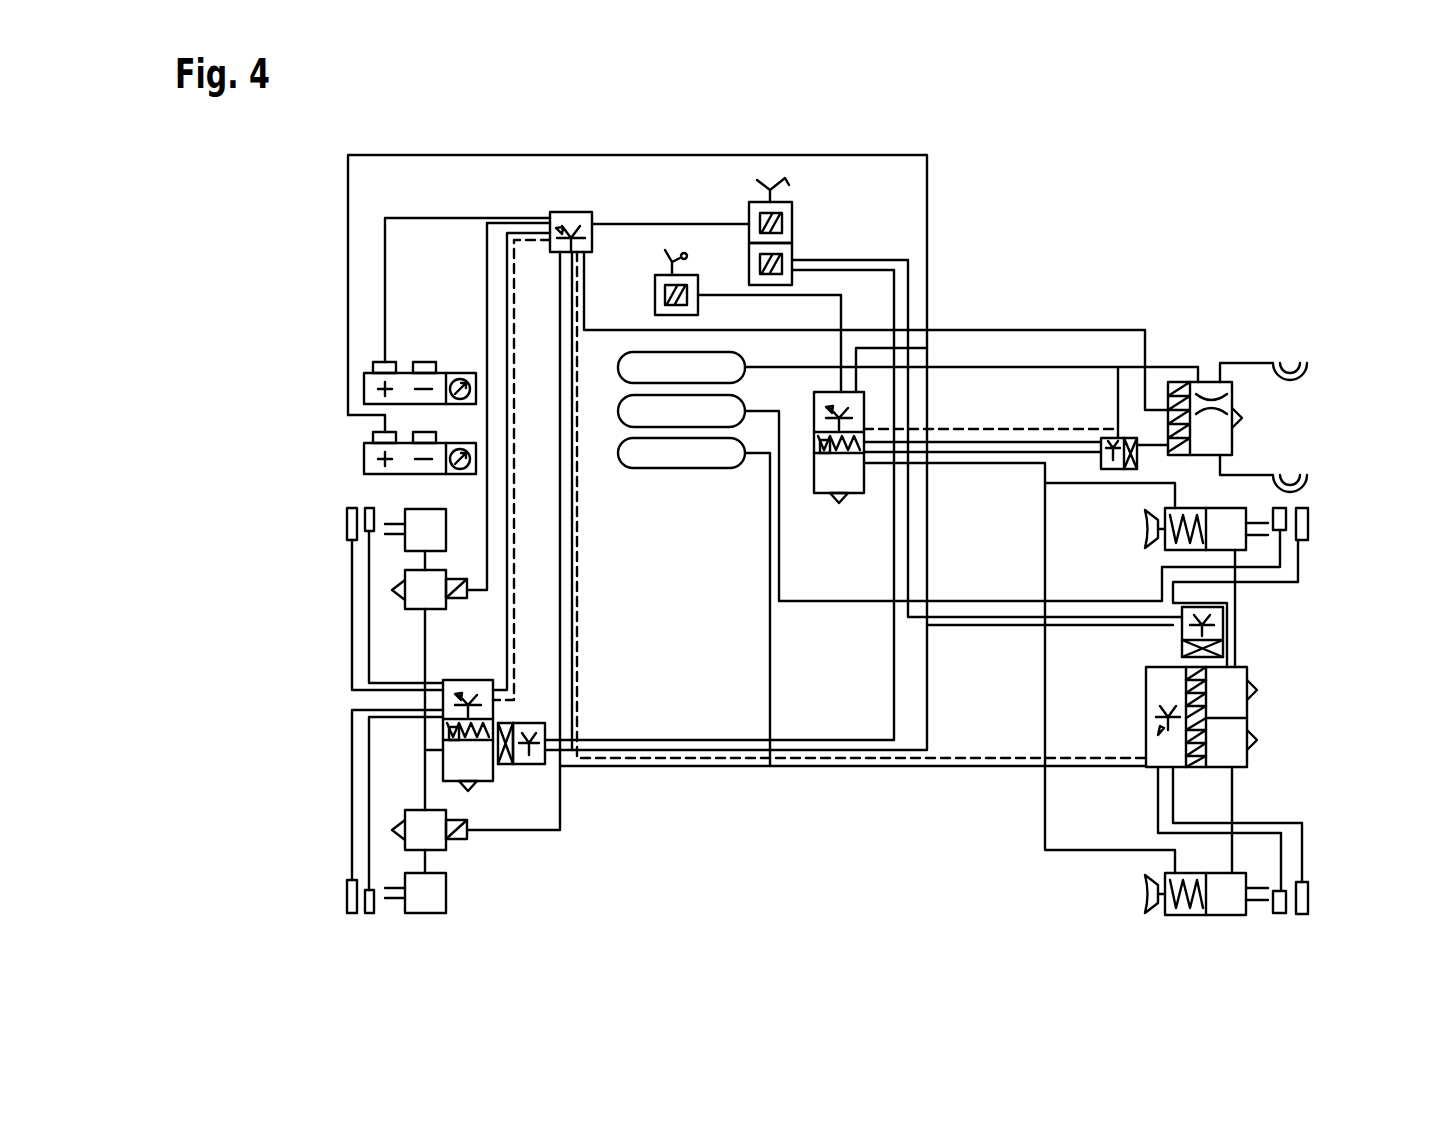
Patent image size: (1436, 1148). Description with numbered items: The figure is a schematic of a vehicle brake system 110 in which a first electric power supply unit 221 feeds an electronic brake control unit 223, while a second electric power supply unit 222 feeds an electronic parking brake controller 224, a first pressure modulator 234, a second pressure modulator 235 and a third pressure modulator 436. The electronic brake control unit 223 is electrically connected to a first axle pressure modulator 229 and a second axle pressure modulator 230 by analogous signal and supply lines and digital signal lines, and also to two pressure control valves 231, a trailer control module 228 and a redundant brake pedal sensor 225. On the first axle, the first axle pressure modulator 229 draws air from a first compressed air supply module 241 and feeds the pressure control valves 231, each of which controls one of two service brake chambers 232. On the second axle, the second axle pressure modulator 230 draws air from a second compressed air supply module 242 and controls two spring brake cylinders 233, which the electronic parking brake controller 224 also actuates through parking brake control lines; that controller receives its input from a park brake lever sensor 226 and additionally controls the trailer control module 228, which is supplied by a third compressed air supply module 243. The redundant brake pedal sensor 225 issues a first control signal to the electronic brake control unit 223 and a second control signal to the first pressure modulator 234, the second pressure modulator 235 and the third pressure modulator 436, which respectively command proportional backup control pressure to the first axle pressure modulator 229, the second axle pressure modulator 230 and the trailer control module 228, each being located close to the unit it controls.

The brake system 110 is at (378, 112).
The first electric power supply unit 221 is at (364, 388).
The second electric power supply unit 222 is at (364, 458).
The electronic brake control unit 223 is at (568, 212).
The electronic parking brake controller 224 is at (866, 408).
The redundant brake pedal sensor 225 is at (802, 222).
The park brake lever sensor 226 is at (648, 288).
The trailer control module 228 is at (1210, 382).
The first axle pressure modulator 229 is at (443, 690).
The second axle pressure modulator 230 is at (1247, 762).
The pressure control valves 231 is at (405, 585).
The service brake chambers 232 is at (405, 515).
The spring brake cylinders 233 is at (1232, 508).
The first pressure modulator 234 is at (553, 764).
The second pressure modulator 235 is at (1223, 630).
The first compressed air supply module 241 is at (713, 468).
The second compressed air supply module 242 is at (683, 427).
The third compressed air supply module 243 is at (618, 370).
The third pressure modulator 436 is at (1110, 438).